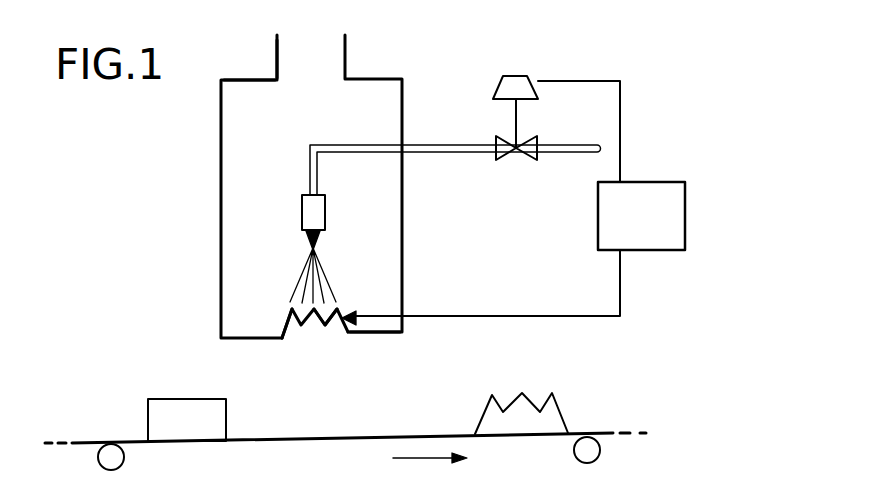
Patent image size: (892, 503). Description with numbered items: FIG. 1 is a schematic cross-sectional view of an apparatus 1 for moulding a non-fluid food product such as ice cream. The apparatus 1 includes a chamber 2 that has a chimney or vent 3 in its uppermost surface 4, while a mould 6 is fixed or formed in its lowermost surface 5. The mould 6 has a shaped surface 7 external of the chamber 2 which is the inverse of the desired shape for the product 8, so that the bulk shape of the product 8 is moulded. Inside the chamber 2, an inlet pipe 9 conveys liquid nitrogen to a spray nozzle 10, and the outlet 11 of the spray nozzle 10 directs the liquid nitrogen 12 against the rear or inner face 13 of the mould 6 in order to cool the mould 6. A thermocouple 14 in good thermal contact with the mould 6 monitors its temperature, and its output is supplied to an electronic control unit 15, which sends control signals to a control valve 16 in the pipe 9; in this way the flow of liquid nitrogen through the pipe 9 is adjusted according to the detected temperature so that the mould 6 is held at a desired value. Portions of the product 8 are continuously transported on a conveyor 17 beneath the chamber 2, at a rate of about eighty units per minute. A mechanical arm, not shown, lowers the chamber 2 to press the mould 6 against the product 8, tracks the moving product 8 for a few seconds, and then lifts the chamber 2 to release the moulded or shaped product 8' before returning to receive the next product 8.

The apparatus 1 is at (530, 58).
The chamber 2 is at (221, 205).
The chimney or vent 3 is at (277, 50).
The uppermost surface 4 is at (237, 80).
The lowermost surface 5 is at (388, 336).
The mould 6 is at (302, 338).
The shaped surface 7 is at (325, 326).
The product 8 is at (162, 416).
The moulded or shaped product 8' is at (542, 408).
The inlet pipe 9 is at (440, 145).
The spray nozzle 10 is at (302, 213).
The outlet 11 is at (318, 236).
The liquid nitrogen 12 is at (299, 268).
The rear or inner face 13 is at (268, 315).
The thermocouple 14 is at (350, 314).
The electronic control unit 15 is at (685, 222).
The control valve 16 is at (517, 125).
The conveyor 17 is at (352, 434).